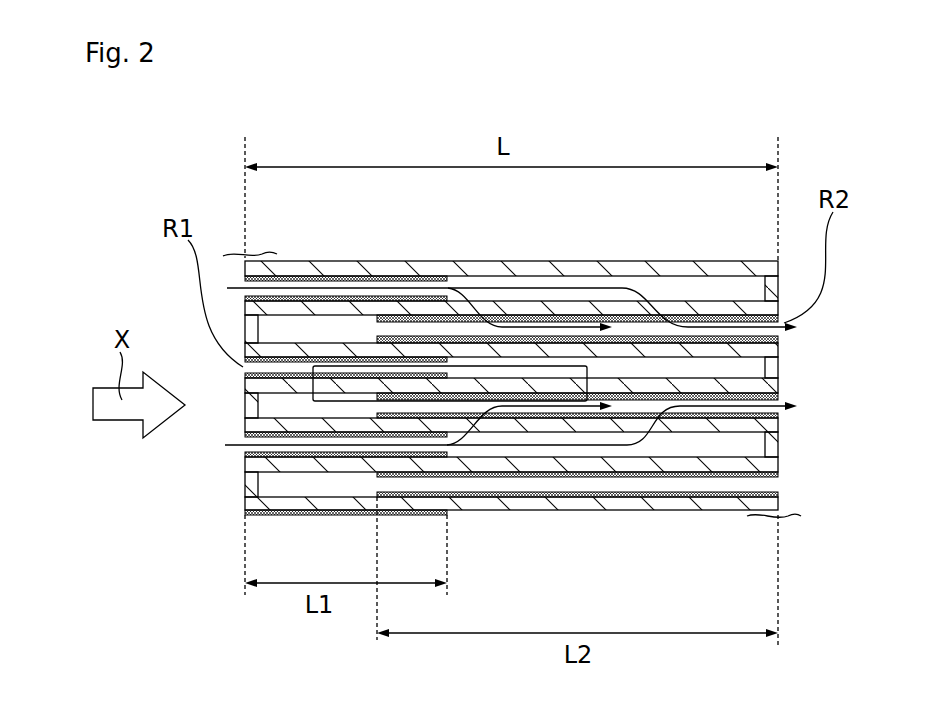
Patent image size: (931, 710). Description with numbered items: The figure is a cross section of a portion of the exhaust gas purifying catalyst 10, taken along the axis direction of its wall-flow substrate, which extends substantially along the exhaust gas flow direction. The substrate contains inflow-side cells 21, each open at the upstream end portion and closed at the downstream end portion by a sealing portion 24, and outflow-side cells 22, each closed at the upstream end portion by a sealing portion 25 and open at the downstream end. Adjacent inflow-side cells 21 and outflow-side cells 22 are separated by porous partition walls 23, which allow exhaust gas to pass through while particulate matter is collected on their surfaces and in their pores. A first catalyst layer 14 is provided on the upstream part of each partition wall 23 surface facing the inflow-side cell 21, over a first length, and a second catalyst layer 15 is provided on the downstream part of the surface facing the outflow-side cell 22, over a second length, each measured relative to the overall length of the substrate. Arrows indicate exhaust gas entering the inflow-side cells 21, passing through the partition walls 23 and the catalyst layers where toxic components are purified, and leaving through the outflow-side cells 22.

The exhaust gas purifying catalyst 10 is at (512, 327).
The first catalyst portion 14 is at (313, 456).
The second catalyst portion 15 is at (545, 477).
The inflow-side cell 21 is at (712, 286).
The outflow-side cell 22 is at (330, 328).
The partition wall 23 is at (567, 272).
The sealing portion 24 is at (778, 446).
The sealing portion 25 is at (255, 478).